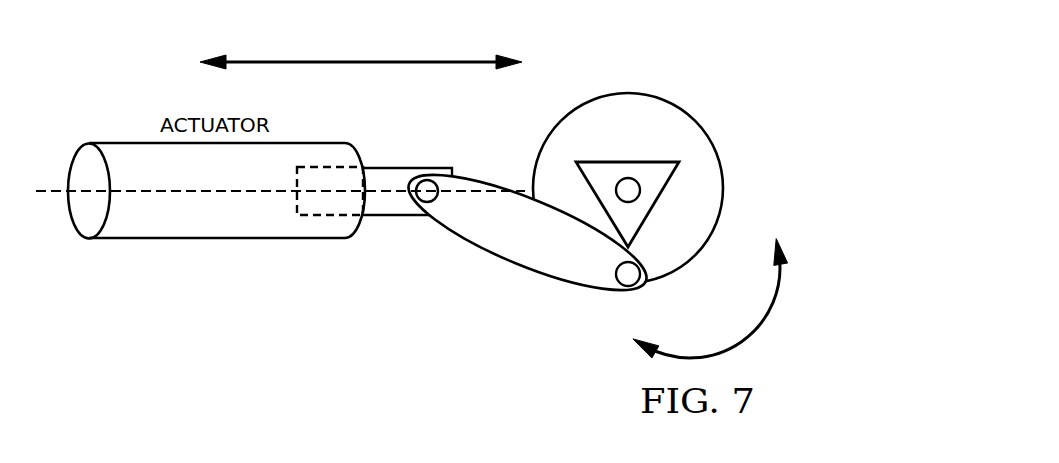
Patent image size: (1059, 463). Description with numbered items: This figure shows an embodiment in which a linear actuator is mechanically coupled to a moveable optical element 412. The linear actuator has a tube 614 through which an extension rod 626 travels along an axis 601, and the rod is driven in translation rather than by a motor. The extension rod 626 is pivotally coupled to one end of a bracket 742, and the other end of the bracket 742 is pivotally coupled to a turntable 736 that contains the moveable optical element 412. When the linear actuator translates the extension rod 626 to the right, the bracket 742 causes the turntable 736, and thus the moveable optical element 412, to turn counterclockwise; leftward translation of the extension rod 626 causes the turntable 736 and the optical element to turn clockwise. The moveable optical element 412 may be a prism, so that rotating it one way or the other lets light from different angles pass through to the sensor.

The axis 601 is at (50, 191).
The tube 614 is at (117, 143).
The extension rod 626 is at (402, 167).
The bracket 742 is at (512, 272).
The turntable 736 is at (722, 188).
The moveable optical element 412 is at (625, 162).